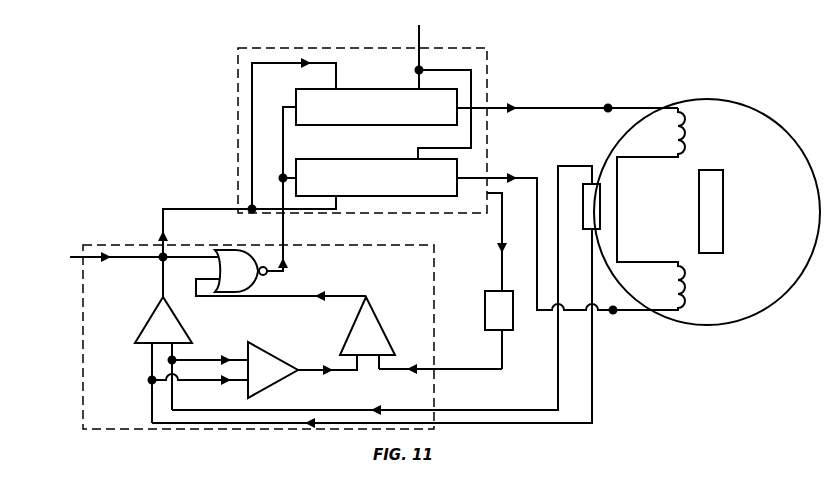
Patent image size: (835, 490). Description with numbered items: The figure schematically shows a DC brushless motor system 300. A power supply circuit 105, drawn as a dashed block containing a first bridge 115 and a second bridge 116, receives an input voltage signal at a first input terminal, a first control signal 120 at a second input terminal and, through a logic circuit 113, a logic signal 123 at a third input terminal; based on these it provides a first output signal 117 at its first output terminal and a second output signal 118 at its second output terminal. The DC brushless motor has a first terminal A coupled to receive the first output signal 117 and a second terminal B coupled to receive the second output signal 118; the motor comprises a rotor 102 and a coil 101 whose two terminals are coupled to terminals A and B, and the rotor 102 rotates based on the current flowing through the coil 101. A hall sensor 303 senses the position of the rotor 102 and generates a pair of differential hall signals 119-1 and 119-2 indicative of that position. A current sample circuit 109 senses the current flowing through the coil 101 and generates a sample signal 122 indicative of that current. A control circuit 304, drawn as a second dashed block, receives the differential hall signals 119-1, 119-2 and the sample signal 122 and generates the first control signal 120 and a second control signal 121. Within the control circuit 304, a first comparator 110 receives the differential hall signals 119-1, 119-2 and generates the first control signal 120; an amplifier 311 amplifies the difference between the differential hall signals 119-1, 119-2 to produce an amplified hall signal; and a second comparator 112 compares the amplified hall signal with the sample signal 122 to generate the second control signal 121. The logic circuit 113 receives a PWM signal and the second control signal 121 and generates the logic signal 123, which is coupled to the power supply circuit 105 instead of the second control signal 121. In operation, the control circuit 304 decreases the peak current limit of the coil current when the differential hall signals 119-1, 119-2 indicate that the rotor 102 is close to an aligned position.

The DC brushless motor system 300 is at (148, 66).
The power supply circuit 105 is at (456, 54).
The first bridge 115 is at (352, 89).
The second bridge 116 is at (352, 161).
The first output signal 117 is at (567, 98).
The second output signal 118 is at (537, 234).
The first control signal 120 is at (249, 224).
The logic signal 123 is at (292, 224).
The logic circuit 113 is at (254, 279).
The second control signal 121 is at (342, 296).
The first comparator 110 is at (137, 327).
The second comparator 112 is at (349, 333).
The amplifier 311 is at (292, 381).
The sample signal 122 is at (440, 361).
The current sample circuit 109 is at (505, 330).
The differential hall signal 119-1 is at (382, 288).
The differential hall signal 119-2 is at (397, 326).
The control circuit 304 is at (120, 242).
The coil 101 is at (688, 122).
The hall sensor 303 is at (601, 196).
The rotor 102 is at (724, 208).